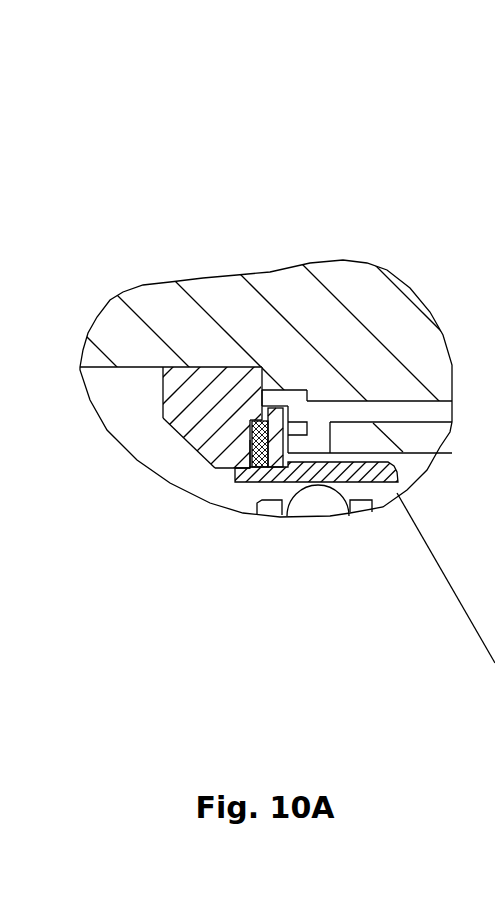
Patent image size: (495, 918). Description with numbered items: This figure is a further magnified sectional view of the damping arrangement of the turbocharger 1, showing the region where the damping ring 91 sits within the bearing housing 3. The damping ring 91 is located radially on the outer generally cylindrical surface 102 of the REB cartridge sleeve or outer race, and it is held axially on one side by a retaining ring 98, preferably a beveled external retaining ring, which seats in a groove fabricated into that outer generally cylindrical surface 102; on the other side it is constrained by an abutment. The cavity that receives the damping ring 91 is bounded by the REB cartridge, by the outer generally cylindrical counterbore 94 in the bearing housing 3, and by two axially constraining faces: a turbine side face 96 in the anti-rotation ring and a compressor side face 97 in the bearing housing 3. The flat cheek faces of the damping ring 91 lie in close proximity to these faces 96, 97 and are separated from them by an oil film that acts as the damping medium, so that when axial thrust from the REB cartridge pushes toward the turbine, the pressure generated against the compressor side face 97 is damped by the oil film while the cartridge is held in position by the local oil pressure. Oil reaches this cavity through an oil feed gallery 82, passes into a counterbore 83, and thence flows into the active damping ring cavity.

The device 1 is at (446, 353).
The bearing housing 3 is at (341, 307).
The oil feed gallery 82 is at (367, 401).
The counterbore 83 is at (276, 398).
The damping ring 91 is at (275, 455).
The outer generally cylindrical counterbore 94 is at (279, 398).
The turbine side face 96 is at (250, 402).
The compressor side face 97 is at (291, 423).
The retaining ring 98 is at (250, 440).
The outer generally cylindrical surface 102 is at (278, 475).